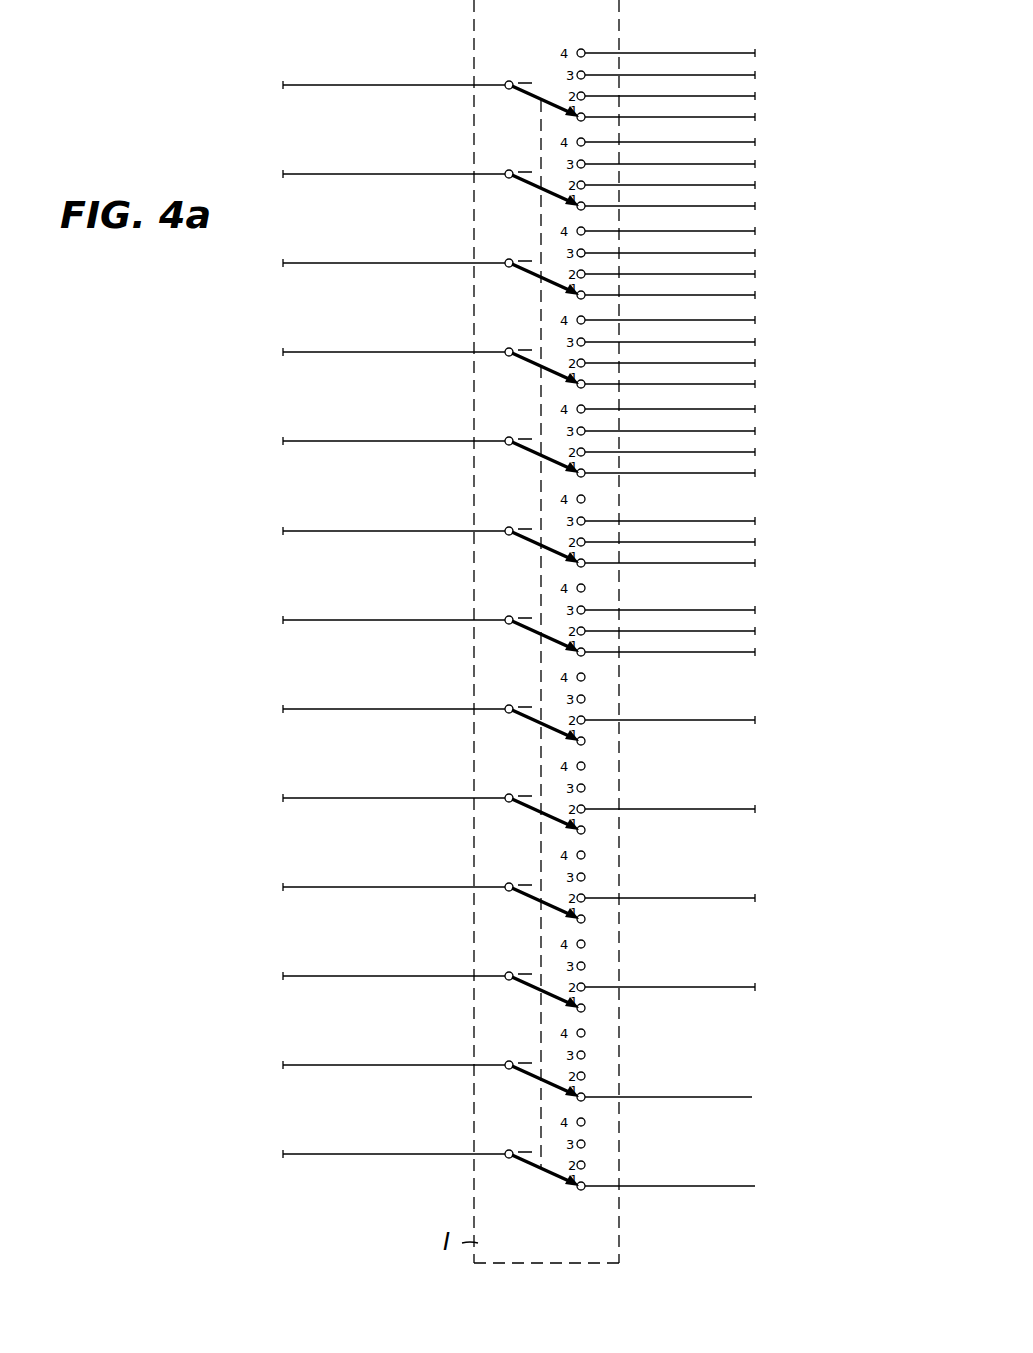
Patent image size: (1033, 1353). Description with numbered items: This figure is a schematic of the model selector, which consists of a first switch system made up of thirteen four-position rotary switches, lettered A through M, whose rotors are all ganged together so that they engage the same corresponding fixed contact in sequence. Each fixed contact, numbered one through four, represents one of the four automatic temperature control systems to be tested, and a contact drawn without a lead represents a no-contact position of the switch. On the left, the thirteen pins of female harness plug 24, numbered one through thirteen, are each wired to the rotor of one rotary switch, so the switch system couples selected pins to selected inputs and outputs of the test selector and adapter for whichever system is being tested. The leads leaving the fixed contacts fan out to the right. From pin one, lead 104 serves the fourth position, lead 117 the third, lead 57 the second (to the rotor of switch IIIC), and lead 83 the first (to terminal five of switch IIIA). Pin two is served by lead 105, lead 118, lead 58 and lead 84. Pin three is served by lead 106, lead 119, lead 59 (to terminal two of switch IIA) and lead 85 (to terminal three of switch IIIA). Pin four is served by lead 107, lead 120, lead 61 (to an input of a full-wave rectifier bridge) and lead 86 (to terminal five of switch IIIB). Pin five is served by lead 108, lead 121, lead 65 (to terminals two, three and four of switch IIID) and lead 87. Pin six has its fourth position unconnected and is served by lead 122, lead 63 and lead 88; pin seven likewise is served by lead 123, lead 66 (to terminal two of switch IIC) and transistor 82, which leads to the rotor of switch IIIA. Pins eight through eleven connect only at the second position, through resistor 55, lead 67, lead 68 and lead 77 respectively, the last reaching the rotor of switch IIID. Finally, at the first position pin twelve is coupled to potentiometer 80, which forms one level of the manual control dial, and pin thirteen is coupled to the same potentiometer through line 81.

The female harness plug 24 is at (284, 42).
The lead 104 is at (710, 53).
The lead 117 is at (732, 75).
The lead 57 is at (737, 96).
The lead 83 is at (743, 117).
The lead 105 is at (733, 142).
The lead 118 is at (737, 164).
The conductor 58 is at (745, 185).
The lead 84 is at (745, 206).
The lead 106 is at (742, 231).
The lead 119 is at (742, 253).
The lead 59 is at (743, 274).
The lead 85 is at (740, 295).
The lead 107 is at (740, 320).
The lead 120 is at (742, 342).
The lead 61 is at (743, 363).
The lead 86 is at (737, 384).
The lead 108 is at (735, 409).
The lead 121 is at (740, 431).
The lead 65 is at (742, 452).
The lead 87 is at (737, 473).
The lead 122 is at (737, 521).
The conductor 63 is at (733, 542).
The lead 88 is at (733, 563).
The lead 123 is at (737, 610).
The lead 66 is at (733, 631).
The transistor 82 is at (737, 652).
The resistor 55 is at (737, 720).
The lead 67 is at (737, 809).
The lead 68 is at (740, 898).
The lead 77 is at (735, 987).
The line 81 is at (728, 1097).
The potentiometer 80 is at (737, 1186).